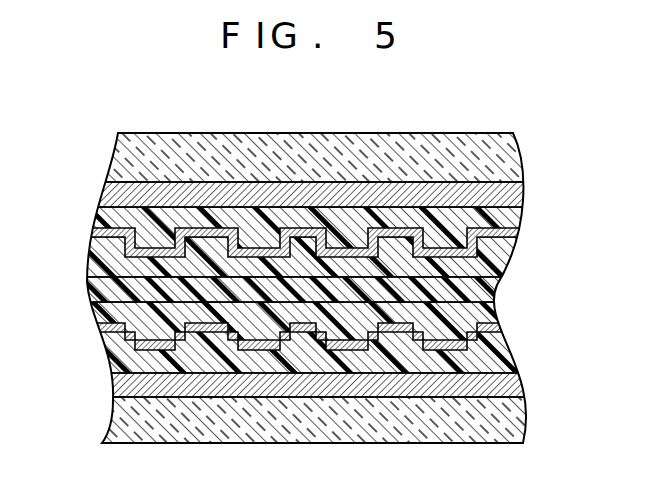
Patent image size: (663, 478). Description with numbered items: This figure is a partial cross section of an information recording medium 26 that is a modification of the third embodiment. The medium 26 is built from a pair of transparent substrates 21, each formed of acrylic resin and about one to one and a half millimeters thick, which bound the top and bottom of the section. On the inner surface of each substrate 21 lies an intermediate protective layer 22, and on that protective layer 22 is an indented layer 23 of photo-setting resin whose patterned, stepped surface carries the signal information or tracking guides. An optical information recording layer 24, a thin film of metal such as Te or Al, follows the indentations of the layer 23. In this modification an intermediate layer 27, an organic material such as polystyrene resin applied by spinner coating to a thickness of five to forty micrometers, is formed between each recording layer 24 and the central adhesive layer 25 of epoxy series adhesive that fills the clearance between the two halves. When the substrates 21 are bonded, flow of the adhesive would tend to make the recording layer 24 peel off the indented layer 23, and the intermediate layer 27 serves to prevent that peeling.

The transparent substrate 21 is at (512, 159).
The intermediate protective layer 22 is at (521, 197).
The indented layer 23 is at (516, 226).
The optical information recording layer 24 is at (500, 247).
The adhesive layer 25 is at (494, 292).
The information recording medium 26 is at (456, 126).
The intermediate layer 27 is at (494, 272).